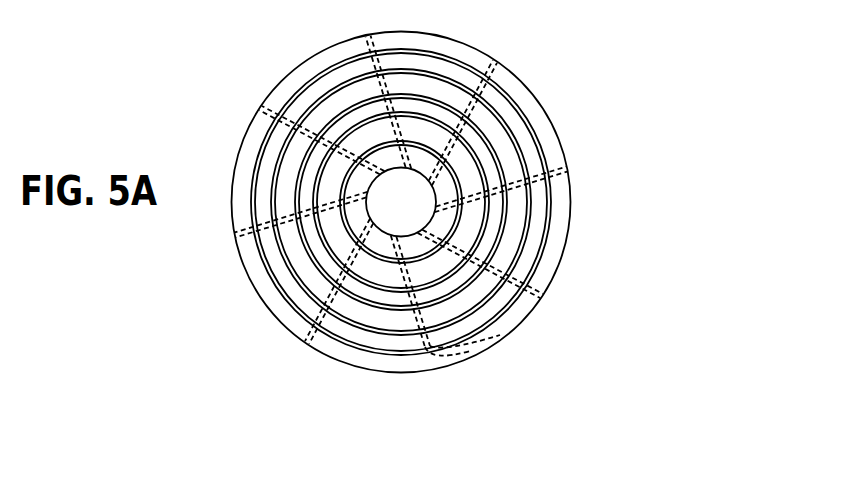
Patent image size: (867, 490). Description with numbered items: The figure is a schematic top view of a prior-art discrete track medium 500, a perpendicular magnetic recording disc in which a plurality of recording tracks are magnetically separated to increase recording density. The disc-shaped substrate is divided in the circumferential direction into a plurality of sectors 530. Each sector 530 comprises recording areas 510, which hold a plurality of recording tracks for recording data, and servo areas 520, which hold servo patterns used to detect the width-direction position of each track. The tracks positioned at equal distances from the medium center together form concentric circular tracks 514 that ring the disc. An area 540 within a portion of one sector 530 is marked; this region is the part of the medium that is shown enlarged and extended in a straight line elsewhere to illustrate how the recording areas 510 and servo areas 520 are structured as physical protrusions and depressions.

The discrete track medium 500 is at (476, 45).
The recording areas 510 is at (538, 113).
The servo areas 520 is at (562, 163).
The sectors 530 is at (497, 202).
The concentric circular tracks 514 is at (552, 212).
The area 540 is at (470, 354).